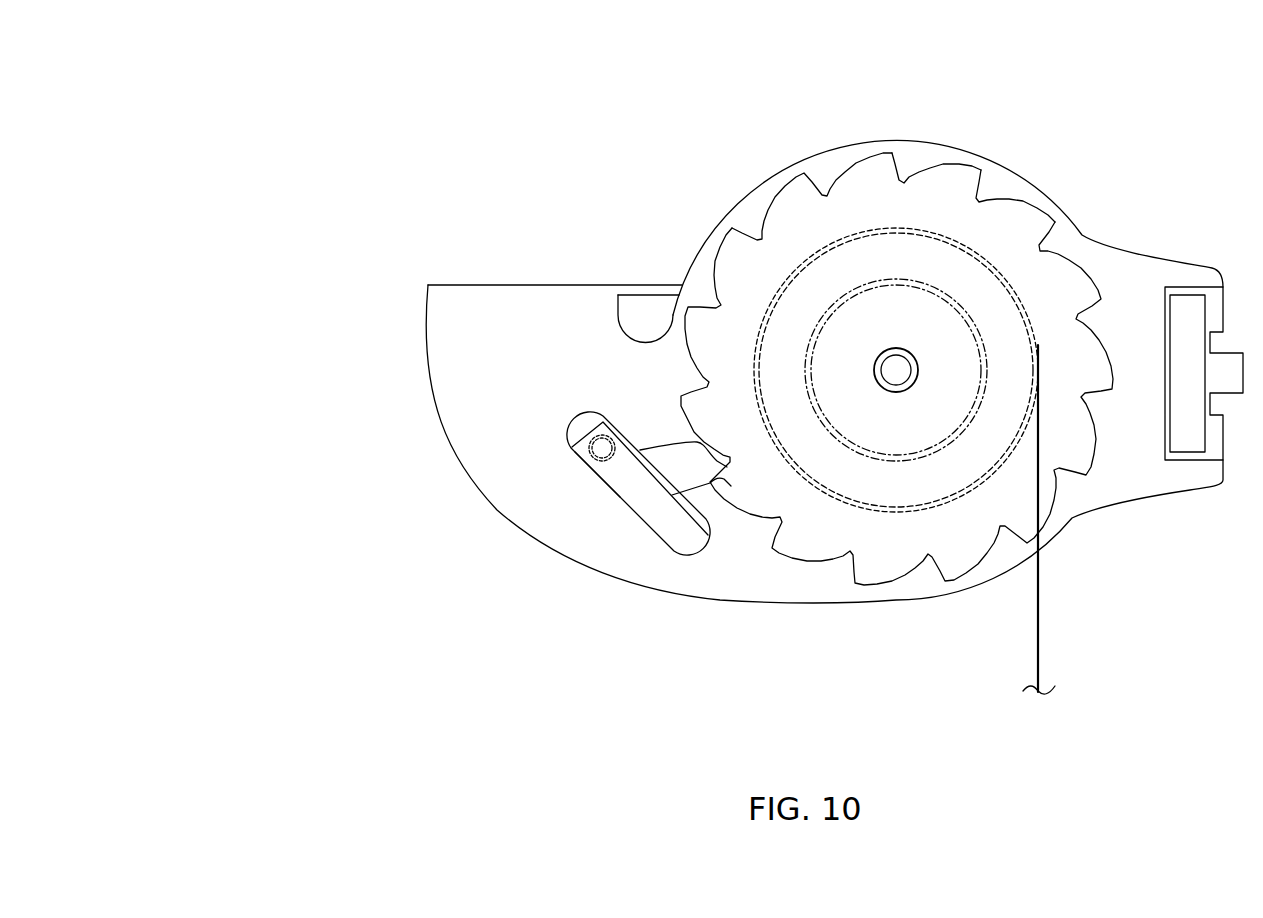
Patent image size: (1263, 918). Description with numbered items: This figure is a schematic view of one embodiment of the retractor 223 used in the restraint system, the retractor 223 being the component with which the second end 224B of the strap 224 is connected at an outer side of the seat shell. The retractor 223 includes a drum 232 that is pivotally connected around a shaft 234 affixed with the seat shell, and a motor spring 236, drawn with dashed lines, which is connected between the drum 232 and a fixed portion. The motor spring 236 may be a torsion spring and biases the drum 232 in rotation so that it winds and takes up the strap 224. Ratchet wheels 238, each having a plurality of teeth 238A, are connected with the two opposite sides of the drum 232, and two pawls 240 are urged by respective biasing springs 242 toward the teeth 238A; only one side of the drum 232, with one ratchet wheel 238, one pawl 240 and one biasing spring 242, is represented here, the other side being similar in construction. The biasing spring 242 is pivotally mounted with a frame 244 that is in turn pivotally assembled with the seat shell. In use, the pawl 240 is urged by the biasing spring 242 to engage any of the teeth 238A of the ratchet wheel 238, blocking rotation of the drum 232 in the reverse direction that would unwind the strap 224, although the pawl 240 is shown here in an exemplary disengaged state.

The retractor 223 is at (276, 38).
The strap 224 is at (1035, 672).
The second end 224B is at (1028, 318).
The drum 232 is at (897, 510).
The shaft 234 is at (912, 388).
The motor spring 236 is at (898, 278).
The ratchet wheel 238 is at (1000, 223).
The teeth 238A is at (795, 174).
The pawl 240 is at (667, 528).
The biasing spring 242 is at (588, 463).
The frame 244 is at (536, 303).